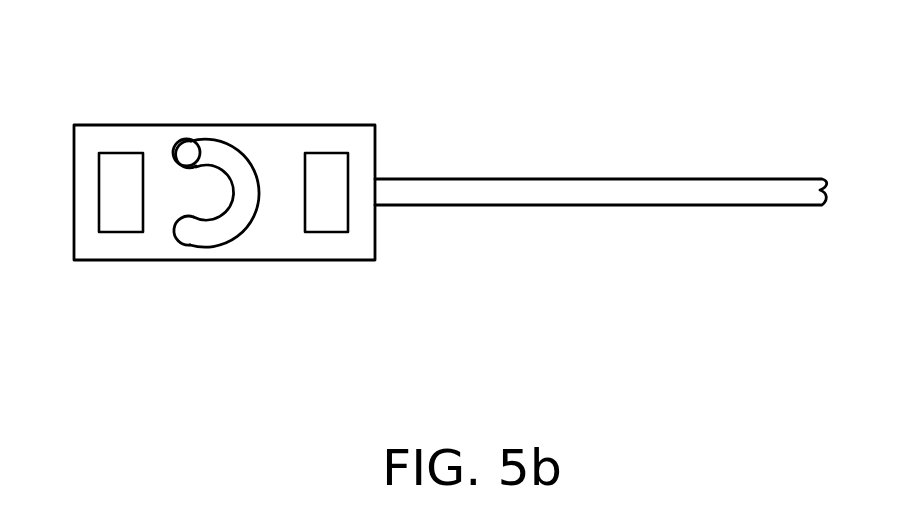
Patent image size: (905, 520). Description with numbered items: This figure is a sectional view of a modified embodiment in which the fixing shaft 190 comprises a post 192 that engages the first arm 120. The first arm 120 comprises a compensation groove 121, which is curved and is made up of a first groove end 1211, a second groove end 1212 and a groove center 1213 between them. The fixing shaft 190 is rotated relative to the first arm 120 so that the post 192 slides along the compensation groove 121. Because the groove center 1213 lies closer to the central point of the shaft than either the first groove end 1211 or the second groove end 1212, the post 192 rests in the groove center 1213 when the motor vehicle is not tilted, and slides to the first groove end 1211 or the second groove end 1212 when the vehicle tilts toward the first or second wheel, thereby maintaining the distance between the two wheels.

The first arm 120 is at (132, 248).
The compensation groove 121 is at (212, 215).
The first groove end 1211 is at (195, 245).
The second groove end 1212 is at (173, 152).
The groove center 1213 is at (259, 188).
The fixing shaft 190 is at (598, 187).
The post 192 is at (185, 155).